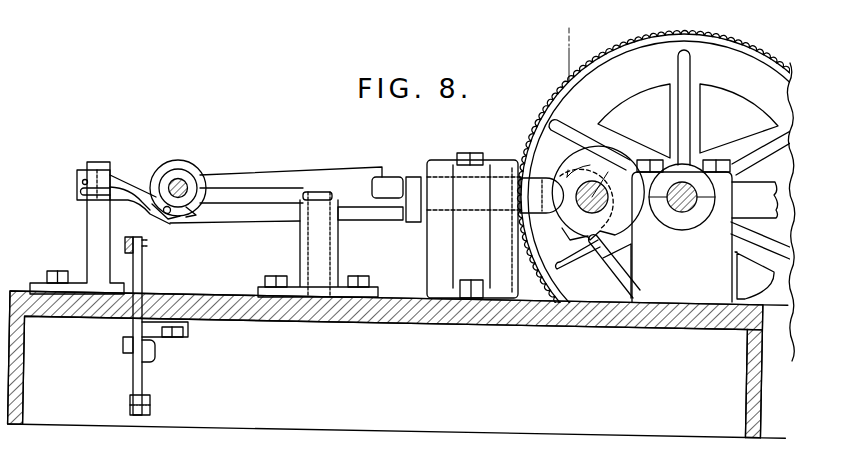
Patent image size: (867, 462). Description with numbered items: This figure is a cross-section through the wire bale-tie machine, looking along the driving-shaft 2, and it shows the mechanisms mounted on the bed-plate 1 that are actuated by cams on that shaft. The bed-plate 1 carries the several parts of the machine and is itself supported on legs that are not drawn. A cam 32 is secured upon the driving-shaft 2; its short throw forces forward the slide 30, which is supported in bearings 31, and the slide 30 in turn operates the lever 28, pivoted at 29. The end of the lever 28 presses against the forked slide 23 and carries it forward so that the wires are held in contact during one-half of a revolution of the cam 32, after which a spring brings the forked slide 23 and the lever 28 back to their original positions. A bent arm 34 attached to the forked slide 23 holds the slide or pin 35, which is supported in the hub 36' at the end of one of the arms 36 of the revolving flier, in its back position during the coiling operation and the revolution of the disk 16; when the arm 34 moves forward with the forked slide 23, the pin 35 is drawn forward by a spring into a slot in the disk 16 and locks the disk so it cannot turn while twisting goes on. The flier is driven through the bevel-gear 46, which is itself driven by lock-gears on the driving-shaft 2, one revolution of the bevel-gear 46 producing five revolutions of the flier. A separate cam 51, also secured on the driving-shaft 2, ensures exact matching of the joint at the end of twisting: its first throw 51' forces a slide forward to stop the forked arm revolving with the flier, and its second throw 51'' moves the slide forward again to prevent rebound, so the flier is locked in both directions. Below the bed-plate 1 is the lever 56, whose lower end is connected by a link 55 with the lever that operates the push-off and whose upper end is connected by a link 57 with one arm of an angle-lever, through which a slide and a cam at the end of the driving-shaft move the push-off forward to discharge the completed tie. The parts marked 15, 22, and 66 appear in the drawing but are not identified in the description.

The bed-plate 1 is at (401, 250).
The driving-shaft 2 is at (603, 176).
The pivot shaft 15 is at (186, 183).
The disk 16 is at (196, 165).
The post 22 is at (77, 228).
The forked slide 23 is at (112, 174).
The lever 28 is at (84, 192).
The pivot 29 is at (320, 192).
The slide 30 is at (415, 214).
The bearings 31 is at (495, 229).
The cam 32 is at (586, 200).
The bent arm 34 is at (160, 170).
The slide or pin 35 is at (167, 214).
The arm of the revolving flier 36 is at (291, 206).
The hub 36' is at (199, 228).
The bevel-gear 46 is at (682, 186).
The cam 51 is at (594, 190).
The first throw 51' is at (578, 257).
The second throw 51'' is at (567, 244).
The link 55 is at (150, 408).
The lever 56 is at (128, 326).
The link 57 is at (125, 254).
The clamp 66 is at (155, 315).